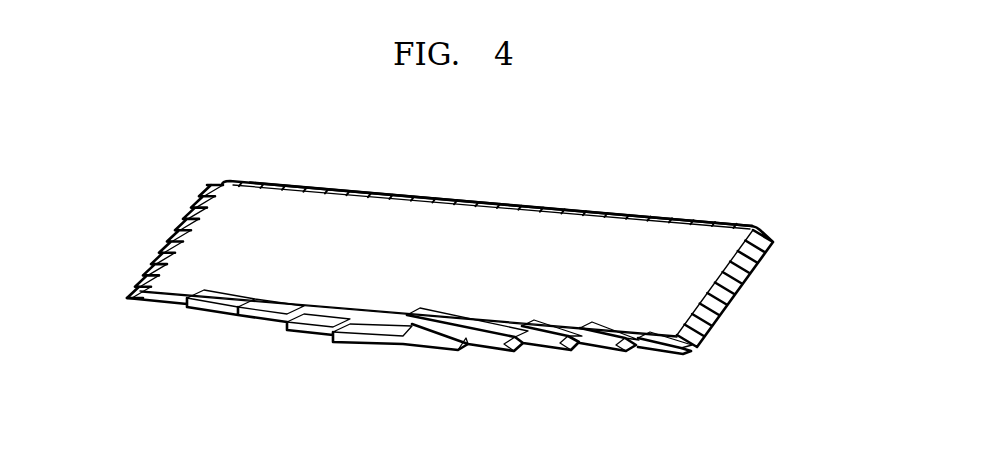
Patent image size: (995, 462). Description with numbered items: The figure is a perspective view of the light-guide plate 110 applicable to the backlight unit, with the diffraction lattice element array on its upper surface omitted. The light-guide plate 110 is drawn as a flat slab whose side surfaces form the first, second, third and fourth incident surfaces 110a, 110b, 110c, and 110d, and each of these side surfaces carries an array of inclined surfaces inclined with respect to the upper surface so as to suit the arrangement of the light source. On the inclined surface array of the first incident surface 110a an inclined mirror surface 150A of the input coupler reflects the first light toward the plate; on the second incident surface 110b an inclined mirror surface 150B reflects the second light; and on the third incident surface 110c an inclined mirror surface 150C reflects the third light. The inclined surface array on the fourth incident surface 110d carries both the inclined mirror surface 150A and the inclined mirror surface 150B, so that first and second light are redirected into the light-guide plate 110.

The light-guide plate 110 is at (463, 256).
The first incident surface 110a is at (186, 235).
The second incident surface 110b is at (712, 296).
The third incident surface 110c is at (568, 212).
The fourth incident surface 110d is at (378, 303).
The inclined mirror surface 150A is at (127, 305).
The inclined mirror surface 150B is at (575, 348).
The inclined mirror surface 150C is at (377, 194).